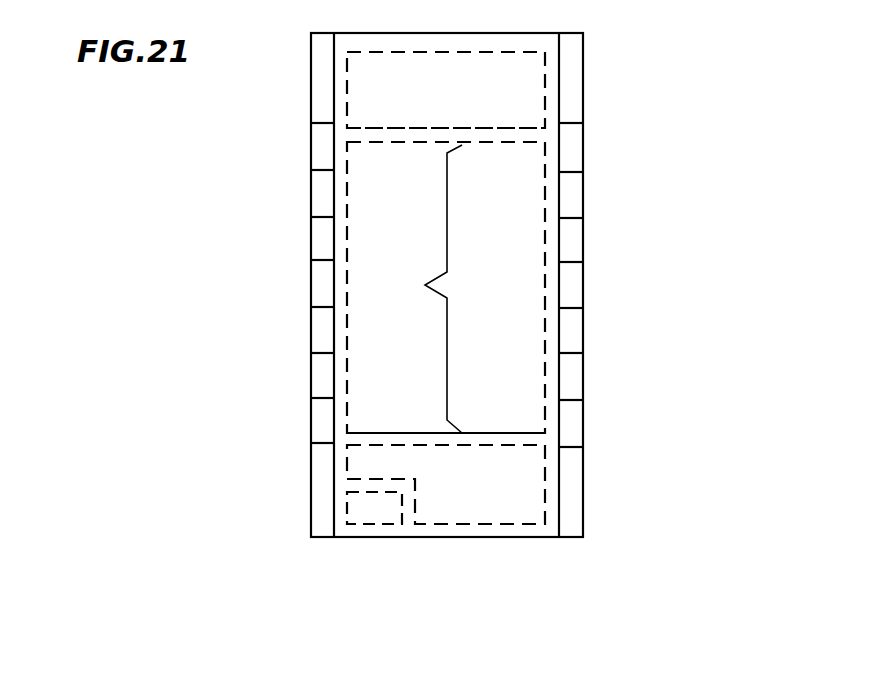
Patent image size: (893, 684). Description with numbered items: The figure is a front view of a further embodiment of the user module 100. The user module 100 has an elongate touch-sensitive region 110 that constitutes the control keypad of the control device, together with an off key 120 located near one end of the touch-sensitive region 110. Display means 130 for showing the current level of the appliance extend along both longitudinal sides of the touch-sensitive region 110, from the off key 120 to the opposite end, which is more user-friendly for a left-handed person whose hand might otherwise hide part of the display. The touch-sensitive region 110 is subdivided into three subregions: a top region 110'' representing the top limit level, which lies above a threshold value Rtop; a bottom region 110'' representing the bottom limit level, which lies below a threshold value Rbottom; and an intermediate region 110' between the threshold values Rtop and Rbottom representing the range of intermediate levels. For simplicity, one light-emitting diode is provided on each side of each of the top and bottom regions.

The user module 100 is at (311, 200).
The display means 130 is at (318, 422).
The touch-sensitive region 110 is at (520, 287).
The intermediate region 110' is at (327, 289).
The top region and bottom region 110'' is at (524, 344).
The off key 120 is at (378, 518).
The threshold value Rtop is at (530, 140).
The threshold value Rbottom is at (535, 442).